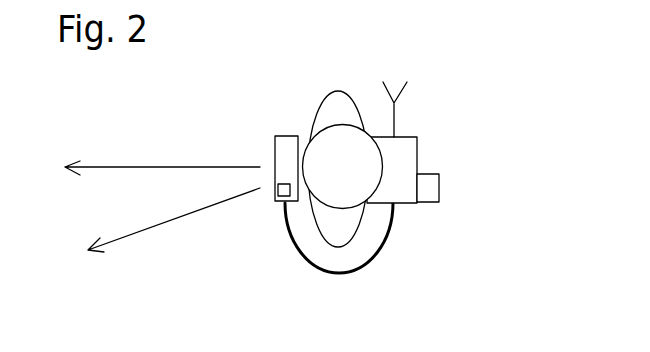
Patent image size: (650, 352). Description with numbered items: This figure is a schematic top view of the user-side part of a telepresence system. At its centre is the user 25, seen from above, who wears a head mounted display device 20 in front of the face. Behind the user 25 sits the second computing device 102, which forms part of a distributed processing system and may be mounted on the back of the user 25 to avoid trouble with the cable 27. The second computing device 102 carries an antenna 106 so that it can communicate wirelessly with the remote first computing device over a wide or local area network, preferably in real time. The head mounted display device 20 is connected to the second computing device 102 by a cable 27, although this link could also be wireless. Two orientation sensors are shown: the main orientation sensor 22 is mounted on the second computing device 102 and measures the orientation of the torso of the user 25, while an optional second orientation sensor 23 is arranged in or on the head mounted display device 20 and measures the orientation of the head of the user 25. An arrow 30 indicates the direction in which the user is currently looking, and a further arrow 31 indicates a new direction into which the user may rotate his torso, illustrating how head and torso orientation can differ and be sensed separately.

The head mounted display device 20 is at (274, 137).
The main orientation sensor 22 is at (438, 197).
The second orientation sensor 23 is at (283, 200).
The user 25 is at (311, 88).
The cable 27 is at (308, 258).
The arrow 30 is at (110, 167).
The further arrow 31 is at (147, 232).
The second computing device 102 is at (412, 149).
The antenna 106 is at (405, 80).